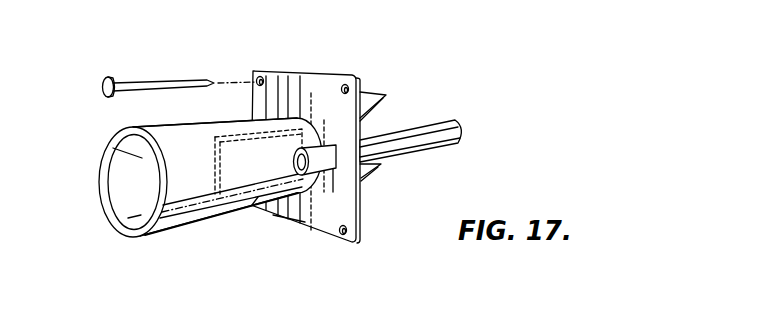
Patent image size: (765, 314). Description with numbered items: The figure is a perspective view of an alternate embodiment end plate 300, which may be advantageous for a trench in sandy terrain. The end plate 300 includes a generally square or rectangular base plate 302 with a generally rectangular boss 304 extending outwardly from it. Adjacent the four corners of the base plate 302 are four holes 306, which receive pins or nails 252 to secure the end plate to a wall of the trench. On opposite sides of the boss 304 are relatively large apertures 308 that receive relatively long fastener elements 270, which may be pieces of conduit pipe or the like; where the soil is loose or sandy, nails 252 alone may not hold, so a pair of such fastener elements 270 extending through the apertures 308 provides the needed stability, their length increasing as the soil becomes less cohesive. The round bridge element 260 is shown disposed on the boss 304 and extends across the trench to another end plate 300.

The nail 252 is at (146, 80).
The bridge element 260 is at (118, 130).
The fastener element 270 is at (408, 129).
The end plate 300 is at (287, 131).
The base plate 302 is at (289, 216).
The boss 304 is at (215, 190).
The hole 306 is at (341, 88).
The aperture 308 is at (337, 152).